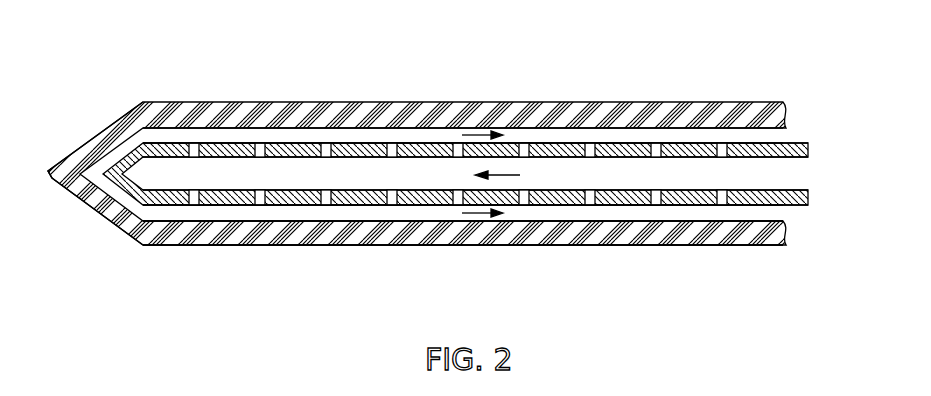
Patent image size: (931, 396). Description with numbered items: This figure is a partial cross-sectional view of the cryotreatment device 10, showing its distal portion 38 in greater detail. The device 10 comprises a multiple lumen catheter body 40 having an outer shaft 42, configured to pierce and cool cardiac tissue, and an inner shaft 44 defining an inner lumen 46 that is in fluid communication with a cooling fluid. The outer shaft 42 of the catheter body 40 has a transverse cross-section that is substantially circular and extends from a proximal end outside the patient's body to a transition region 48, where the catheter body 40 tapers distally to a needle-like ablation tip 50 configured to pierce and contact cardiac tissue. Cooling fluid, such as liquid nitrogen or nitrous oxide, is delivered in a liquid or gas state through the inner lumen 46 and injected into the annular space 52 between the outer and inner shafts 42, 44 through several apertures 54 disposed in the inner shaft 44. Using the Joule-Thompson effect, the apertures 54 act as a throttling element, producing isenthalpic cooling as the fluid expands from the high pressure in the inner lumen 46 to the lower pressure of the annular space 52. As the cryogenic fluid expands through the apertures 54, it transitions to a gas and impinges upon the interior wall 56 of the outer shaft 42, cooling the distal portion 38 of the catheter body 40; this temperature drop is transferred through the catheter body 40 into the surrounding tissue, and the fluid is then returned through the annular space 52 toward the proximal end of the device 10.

The cryotreatment device 10 is at (423, 167).
The distal portion 38 is at (463, 88).
The multiple lumen catheter body 40 is at (513, 257).
The outer shaft 42 is at (430, 244).
The inner shaft 44 is at (628, 206).
The inner lumen 46 is at (704, 184).
The transition region 48 is at (145, 246).
The ablation tip 50 is at (48, 176).
The annular space 52 is at (642, 135).
The apertures 54 is at (194, 147).
The interior wall 56 is at (368, 133).